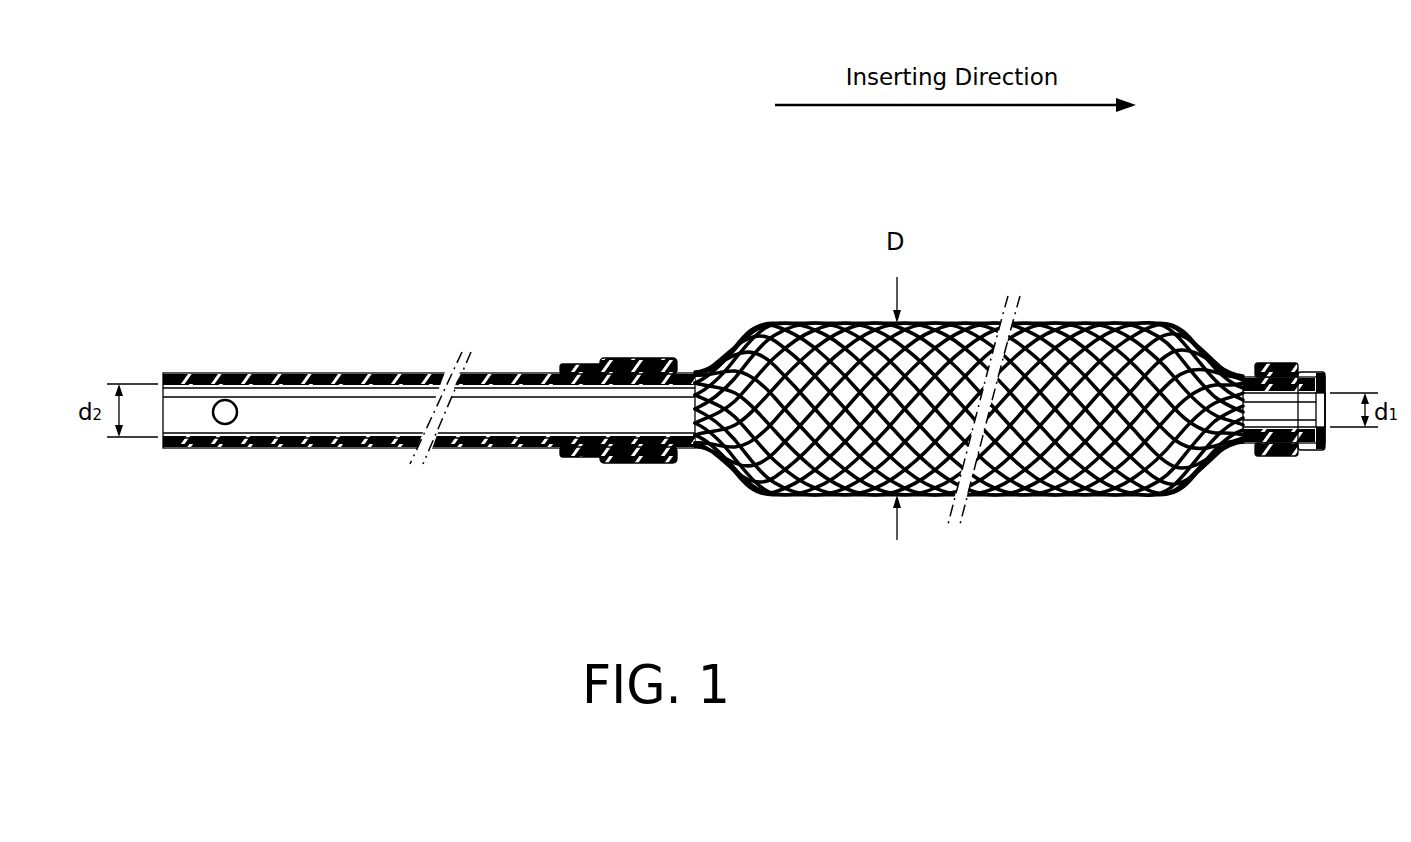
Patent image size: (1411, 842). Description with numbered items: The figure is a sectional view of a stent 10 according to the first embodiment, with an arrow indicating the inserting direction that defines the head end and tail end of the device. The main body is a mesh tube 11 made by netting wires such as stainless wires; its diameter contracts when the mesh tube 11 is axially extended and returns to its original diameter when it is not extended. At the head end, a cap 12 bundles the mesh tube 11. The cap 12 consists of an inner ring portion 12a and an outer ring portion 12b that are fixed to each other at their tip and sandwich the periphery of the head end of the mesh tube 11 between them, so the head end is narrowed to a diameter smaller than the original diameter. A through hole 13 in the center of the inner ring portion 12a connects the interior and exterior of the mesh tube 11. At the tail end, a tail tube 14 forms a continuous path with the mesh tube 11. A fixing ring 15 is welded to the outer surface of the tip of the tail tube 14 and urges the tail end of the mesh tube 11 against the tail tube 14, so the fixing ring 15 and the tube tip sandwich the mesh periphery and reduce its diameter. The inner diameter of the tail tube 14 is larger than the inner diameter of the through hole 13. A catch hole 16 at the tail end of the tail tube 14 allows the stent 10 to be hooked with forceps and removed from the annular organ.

The stent 10 is at (810, 296).
The mesh tube 11 is at (1096, 323).
The cap 12 is at (1312, 342).
The inner ring portion 12a is at (1338, 369).
The outer ring portion 12b is at (1270, 363).
The through hole 13 is at (1324, 420).
The tail tube 14 is at (360, 373).
The fixing ring 15 is at (580, 364).
The catch hole 16 is at (233, 400).